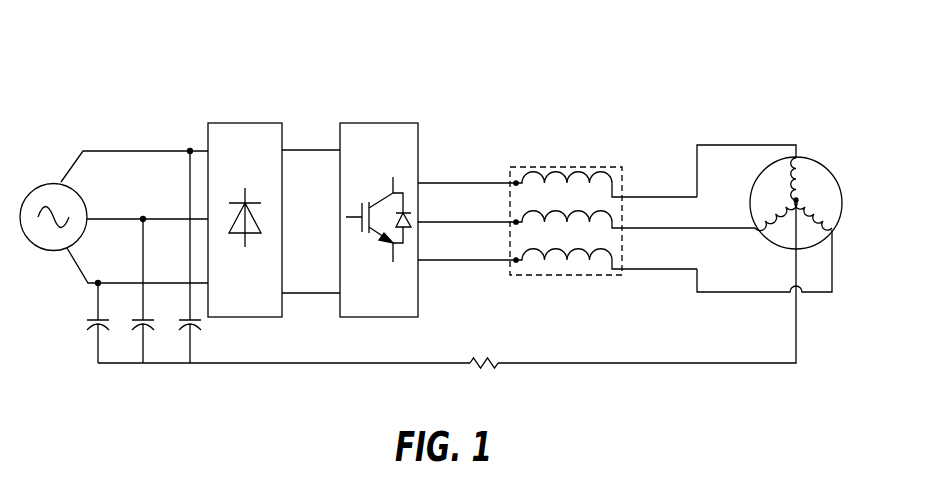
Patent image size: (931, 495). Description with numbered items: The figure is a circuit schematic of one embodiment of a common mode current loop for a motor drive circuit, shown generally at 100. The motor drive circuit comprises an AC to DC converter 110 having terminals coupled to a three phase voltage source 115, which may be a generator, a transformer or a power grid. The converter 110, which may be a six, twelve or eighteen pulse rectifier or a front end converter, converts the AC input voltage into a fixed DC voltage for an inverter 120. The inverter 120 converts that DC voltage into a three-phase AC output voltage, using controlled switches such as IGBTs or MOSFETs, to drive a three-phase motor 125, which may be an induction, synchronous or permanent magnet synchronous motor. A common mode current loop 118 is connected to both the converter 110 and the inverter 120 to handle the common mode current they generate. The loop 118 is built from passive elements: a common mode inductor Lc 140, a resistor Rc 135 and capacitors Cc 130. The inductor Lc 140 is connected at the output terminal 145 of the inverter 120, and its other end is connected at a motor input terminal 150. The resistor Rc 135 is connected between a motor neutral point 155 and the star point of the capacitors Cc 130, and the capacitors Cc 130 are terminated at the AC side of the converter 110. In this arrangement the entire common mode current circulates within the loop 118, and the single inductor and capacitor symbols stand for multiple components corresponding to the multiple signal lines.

The common mode current loop for a motor drive circuit 100 is at (750, 62).
The AC to DC converter 110 is at (246, 123).
The three phase voltage source 115 is at (55, 182).
The common mode current loop 118 is at (648, 363).
The inverter 120 is at (380, 123).
The motor 125 is at (835, 178).
The capacitor (Cc) 130 is at (72, 333).
The resistor (Rc) 135 is at (499, 366).
The common mode inductor (Lc) 140 is at (573, 167).
The output terminal 145 is at (420, 183).
The motor input terminal 150 is at (797, 158).
The motor neutral point 155 is at (794, 199).